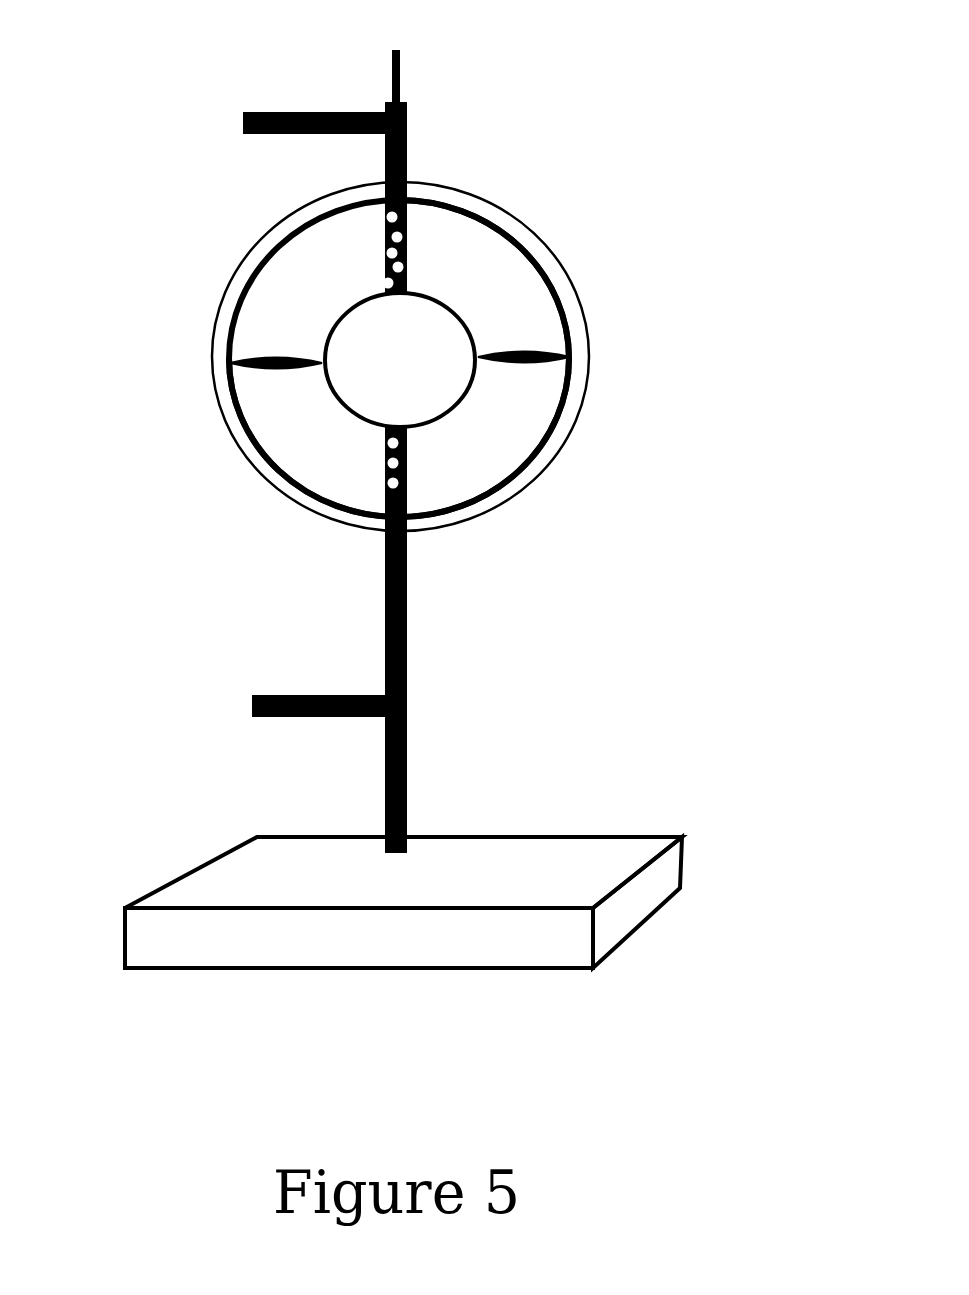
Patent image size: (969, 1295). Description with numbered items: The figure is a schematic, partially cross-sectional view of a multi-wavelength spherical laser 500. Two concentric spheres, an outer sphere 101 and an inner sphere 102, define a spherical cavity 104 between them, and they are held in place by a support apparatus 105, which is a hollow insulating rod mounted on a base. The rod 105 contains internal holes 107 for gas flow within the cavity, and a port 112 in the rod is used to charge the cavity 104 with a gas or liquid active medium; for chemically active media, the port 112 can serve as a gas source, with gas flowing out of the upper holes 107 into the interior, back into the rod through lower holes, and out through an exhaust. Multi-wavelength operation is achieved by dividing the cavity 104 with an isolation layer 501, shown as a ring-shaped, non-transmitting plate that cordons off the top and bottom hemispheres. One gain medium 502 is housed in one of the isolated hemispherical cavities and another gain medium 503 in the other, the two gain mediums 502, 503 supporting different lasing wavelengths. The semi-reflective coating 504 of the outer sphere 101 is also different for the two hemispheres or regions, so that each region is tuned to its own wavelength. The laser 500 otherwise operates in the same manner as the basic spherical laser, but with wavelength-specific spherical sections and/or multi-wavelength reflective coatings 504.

The multi-wavelength spherical laser 500 is at (640, 113).
The outer sphere 101 is at (508, 222).
The inner sphere 102 is at (335, 322).
The spherical cavity 104 is at (297, 447).
The support apparatus 105 is at (385, 657).
The internal holes 107 is at (385, 257).
The port 112 is at (235, 122).
The isolation layer 501 is at (272, 362).
The gain medium 502 is at (503, 303).
The gain medium 503 is at (515, 427).
The multi-wavelength reflective coatings 504 is at (455, 202).